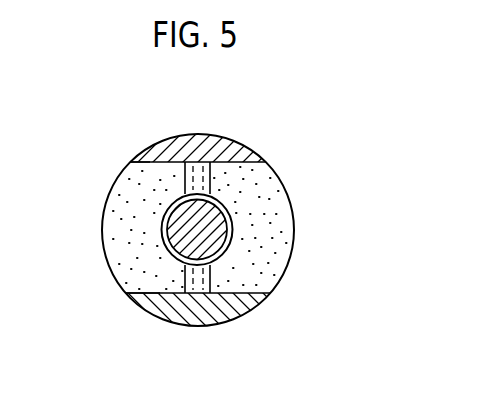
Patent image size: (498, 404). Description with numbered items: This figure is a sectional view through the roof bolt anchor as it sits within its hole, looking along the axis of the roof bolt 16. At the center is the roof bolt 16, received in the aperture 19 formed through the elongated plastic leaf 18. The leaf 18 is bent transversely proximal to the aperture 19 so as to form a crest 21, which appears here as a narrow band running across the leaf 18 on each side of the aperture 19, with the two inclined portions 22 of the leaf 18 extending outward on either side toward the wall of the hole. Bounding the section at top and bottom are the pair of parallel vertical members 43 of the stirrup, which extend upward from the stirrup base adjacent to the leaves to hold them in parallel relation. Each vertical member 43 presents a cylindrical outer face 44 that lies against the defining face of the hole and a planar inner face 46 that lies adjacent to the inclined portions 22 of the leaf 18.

The roof bolt 16 is at (168, 231).
The elongated plastic leaf 18 is at (110, 192).
The aperture 19 is at (228, 248).
The crest 21 is at (195, 172).
The inclined portion 22 is at (130, 187).
The vertical member 43 is at (170, 138).
The cylindrical outer face 44 is at (198, 172).
The planar inner face 46 is at (147, 163).